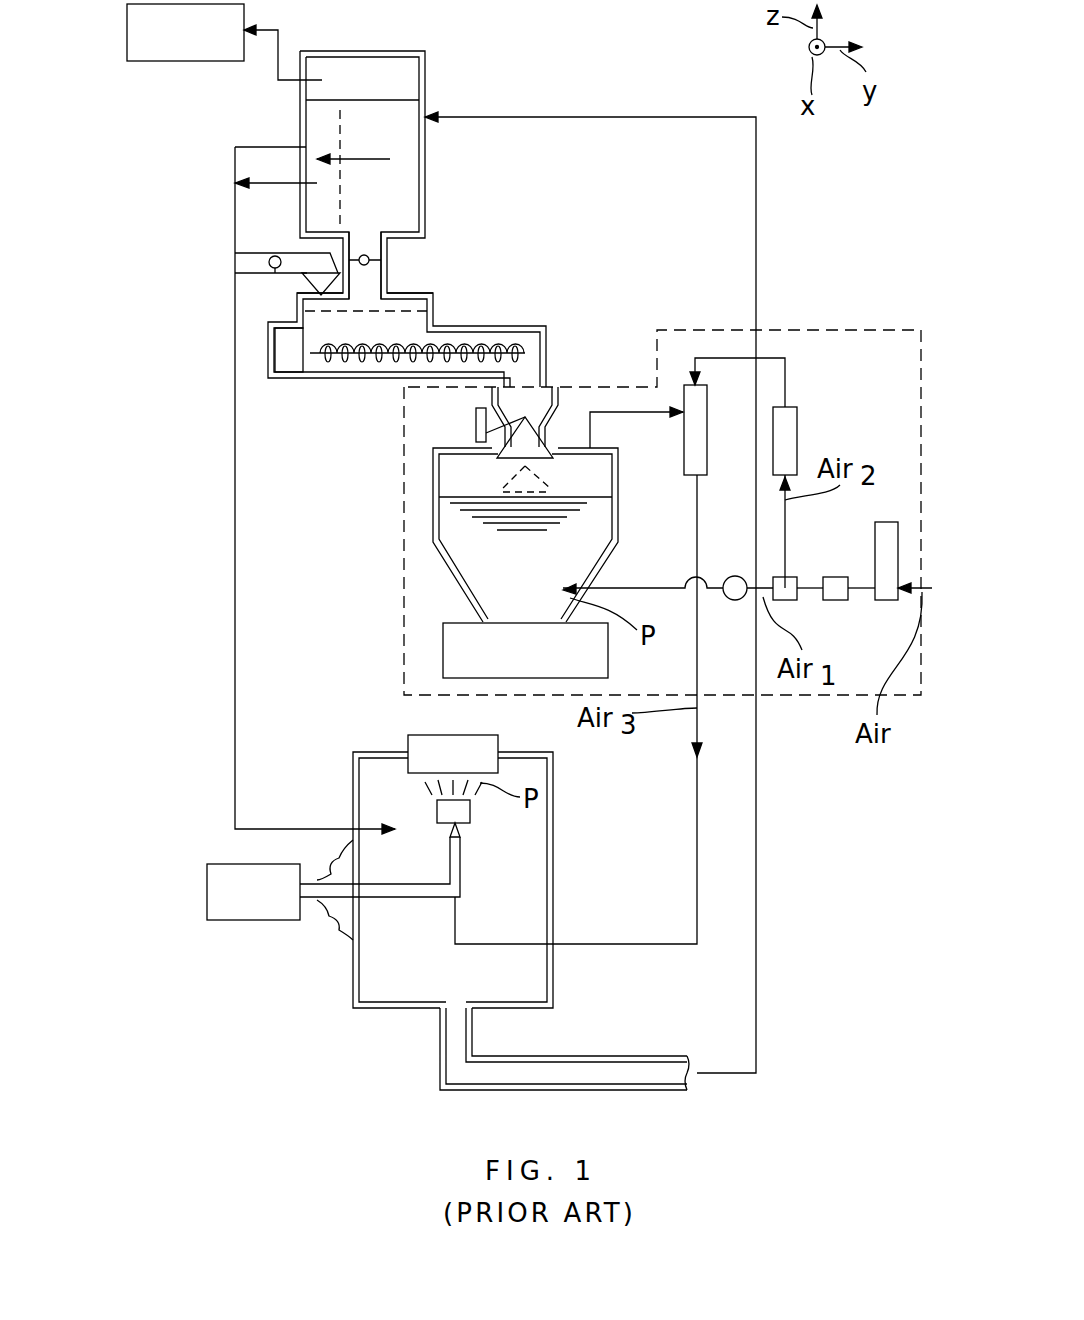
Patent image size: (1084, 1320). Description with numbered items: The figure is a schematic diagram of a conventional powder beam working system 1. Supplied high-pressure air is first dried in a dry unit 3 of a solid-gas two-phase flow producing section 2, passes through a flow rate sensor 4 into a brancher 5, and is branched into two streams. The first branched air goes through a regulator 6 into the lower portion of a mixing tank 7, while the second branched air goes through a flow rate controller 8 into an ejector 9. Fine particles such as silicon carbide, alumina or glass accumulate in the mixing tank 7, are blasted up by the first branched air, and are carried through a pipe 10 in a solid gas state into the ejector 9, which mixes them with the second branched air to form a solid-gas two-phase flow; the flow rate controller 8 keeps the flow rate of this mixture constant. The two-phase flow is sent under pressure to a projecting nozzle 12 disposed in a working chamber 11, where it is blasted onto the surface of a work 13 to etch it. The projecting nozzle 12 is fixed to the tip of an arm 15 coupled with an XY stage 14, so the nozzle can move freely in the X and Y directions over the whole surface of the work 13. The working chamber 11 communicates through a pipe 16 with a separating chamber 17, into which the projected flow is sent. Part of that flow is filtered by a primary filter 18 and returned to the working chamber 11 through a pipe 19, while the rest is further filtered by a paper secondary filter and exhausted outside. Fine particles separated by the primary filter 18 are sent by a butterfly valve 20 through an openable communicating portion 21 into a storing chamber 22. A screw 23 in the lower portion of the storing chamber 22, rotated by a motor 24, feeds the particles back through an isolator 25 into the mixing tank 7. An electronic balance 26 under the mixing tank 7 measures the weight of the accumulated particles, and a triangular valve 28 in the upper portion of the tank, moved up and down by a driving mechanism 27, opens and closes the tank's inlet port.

The powder beam working system 1 is at (870, 1097).
The solid-gas two-phase flow producing section 2 is at (812, 695).
The dry unit 3 is at (887, 522).
The flow rate sensor 4 is at (840, 577).
The brancher 5 is at (795, 577).
The regulator 6 is at (735, 577).
The mixing tank 7 is at (450, 580).
The flow rate controller 8 is at (797, 415).
The ejector 9 is at (707, 447).
The pipe 10 is at (640, 415).
The working chamber 11 is at (556, 800).
The projecting nozzle 12 is at (472, 810).
The work 13 is at (410, 748).
The XY stage 14 is at (283, 908).
The arm 15 is at (400, 897).
The pipe 16 is at (587, 1056).
The separating chamber 17 is at (300, 122).
The primary filter 18 is at (345, 125).
The pipe 19 is at (370, 60).
The butterfly valve 20 is at (368, 252).
The openable communicating portion 21 is at (386, 291).
The storing chamber 22 is at (412, 323).
The screw 23 is at (360, 360).
The motor 24 is at (270, 345).
The isolator 25 is at (560, 393).
The electronic balance 26 is at (483, 678).
The driving mechanism 27 is at (476, 432).
The triangular valve 28 is at (553, 441).